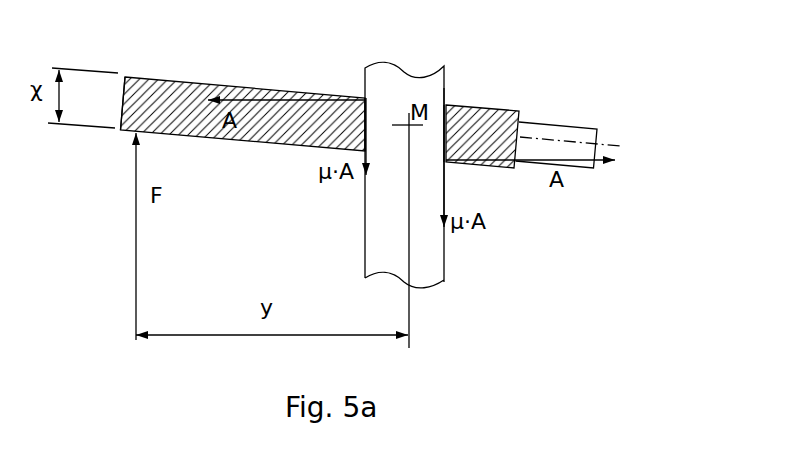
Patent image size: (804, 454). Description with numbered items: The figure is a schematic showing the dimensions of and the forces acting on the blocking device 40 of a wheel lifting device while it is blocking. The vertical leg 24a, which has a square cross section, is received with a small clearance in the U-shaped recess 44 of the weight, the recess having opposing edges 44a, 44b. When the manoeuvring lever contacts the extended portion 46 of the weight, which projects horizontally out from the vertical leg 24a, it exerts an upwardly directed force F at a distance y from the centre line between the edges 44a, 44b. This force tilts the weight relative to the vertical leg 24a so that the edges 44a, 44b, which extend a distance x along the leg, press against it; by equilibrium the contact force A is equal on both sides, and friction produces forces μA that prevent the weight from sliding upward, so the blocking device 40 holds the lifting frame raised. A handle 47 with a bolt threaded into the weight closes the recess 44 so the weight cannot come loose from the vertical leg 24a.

The vertical leg 24a is at (365, 250).
The blocking device 40 is at (280, 88).
The extended portion of the weight 46 is at (139, 134).
The U-shaped recess 44 is at (444, 119).
The first opposing edge of the U-shaped recess 44a is at (366, 128).
The second opposing edge of the U-shaped recess 44b is at (444, 138).
The handle 47 is at (570, 126).